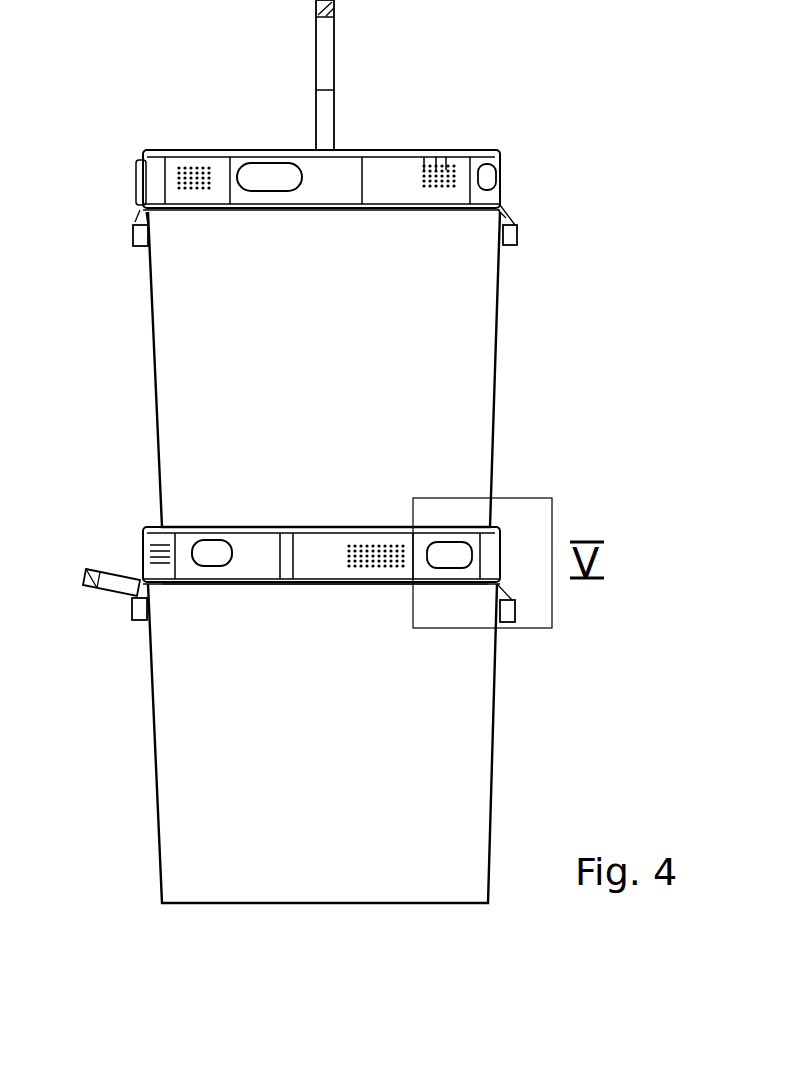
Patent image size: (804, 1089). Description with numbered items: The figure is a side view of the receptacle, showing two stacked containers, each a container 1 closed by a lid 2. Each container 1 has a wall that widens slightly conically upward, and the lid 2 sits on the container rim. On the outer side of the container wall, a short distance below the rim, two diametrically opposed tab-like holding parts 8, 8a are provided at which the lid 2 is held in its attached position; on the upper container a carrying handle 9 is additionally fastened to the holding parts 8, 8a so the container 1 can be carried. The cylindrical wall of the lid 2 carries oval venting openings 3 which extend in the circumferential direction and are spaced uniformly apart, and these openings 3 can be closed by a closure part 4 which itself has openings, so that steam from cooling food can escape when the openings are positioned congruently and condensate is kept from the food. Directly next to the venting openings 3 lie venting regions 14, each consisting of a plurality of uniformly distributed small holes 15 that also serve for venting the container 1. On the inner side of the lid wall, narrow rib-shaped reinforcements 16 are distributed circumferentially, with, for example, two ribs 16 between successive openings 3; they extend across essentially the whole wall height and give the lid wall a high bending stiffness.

The container 1 is at (504, 368).
The lid 2 is at (352, 592).
The venting openings 3 is at (275, 180).
The closure part 4 is at (474, 146).
The holding part 8 is at (517, 607).
The holding part 8a is at (137, 612).
The carrying handle 9 is at (338, 44).
The venting regions 14 is at (200, 190).
The small holes 15 is at (447, 165).
The rib-shaped reinforcements 16 is at (293, 560).